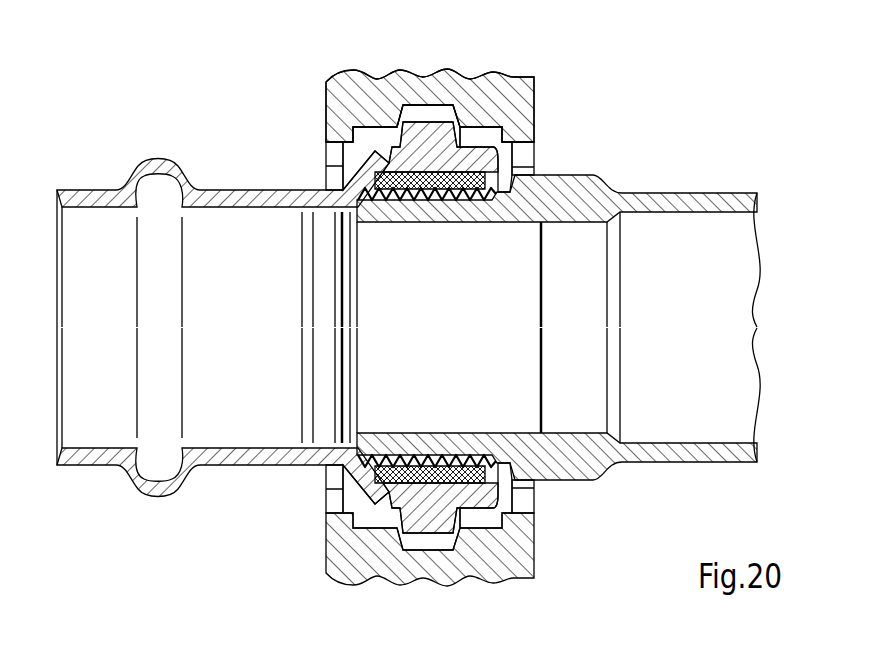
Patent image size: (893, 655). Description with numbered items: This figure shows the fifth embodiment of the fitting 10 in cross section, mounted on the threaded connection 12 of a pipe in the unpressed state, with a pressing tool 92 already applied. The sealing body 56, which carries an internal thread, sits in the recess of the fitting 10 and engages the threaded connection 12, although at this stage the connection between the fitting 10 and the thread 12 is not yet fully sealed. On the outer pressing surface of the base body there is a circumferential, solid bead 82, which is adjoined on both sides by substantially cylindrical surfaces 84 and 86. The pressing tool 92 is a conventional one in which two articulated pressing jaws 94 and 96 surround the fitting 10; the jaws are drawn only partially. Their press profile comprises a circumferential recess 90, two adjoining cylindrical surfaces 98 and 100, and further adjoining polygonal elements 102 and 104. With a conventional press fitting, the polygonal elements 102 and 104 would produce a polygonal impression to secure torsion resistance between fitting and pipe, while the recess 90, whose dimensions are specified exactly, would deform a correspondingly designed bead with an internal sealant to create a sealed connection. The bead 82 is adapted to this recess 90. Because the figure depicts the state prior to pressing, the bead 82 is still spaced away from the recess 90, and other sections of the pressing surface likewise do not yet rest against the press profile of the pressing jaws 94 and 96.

The fitting 10 is at (108, 112).
The threaded connection 12 is at (395, 197).
The sealing body 56 is at (450, 195).
The bead 82 is at (427, 138).
The cylindrical surface 84 is at (378, 130).
The cylindrical surface 86 is at (483, 148).
The circumferential recess 90 is at (422, 525).
The pressing tool 92 is at (547, 127).
The pressing jaw 94 is at (522, 102).
The pressing jaw 96 is at (517, 557).
The cylindrical surface 98 is at (368, 525).
The cylindrical surface 100 is at (488, 515).
The polygonal element 102 is at (333, 510).
The polygonal element 104 is at (522, 510).